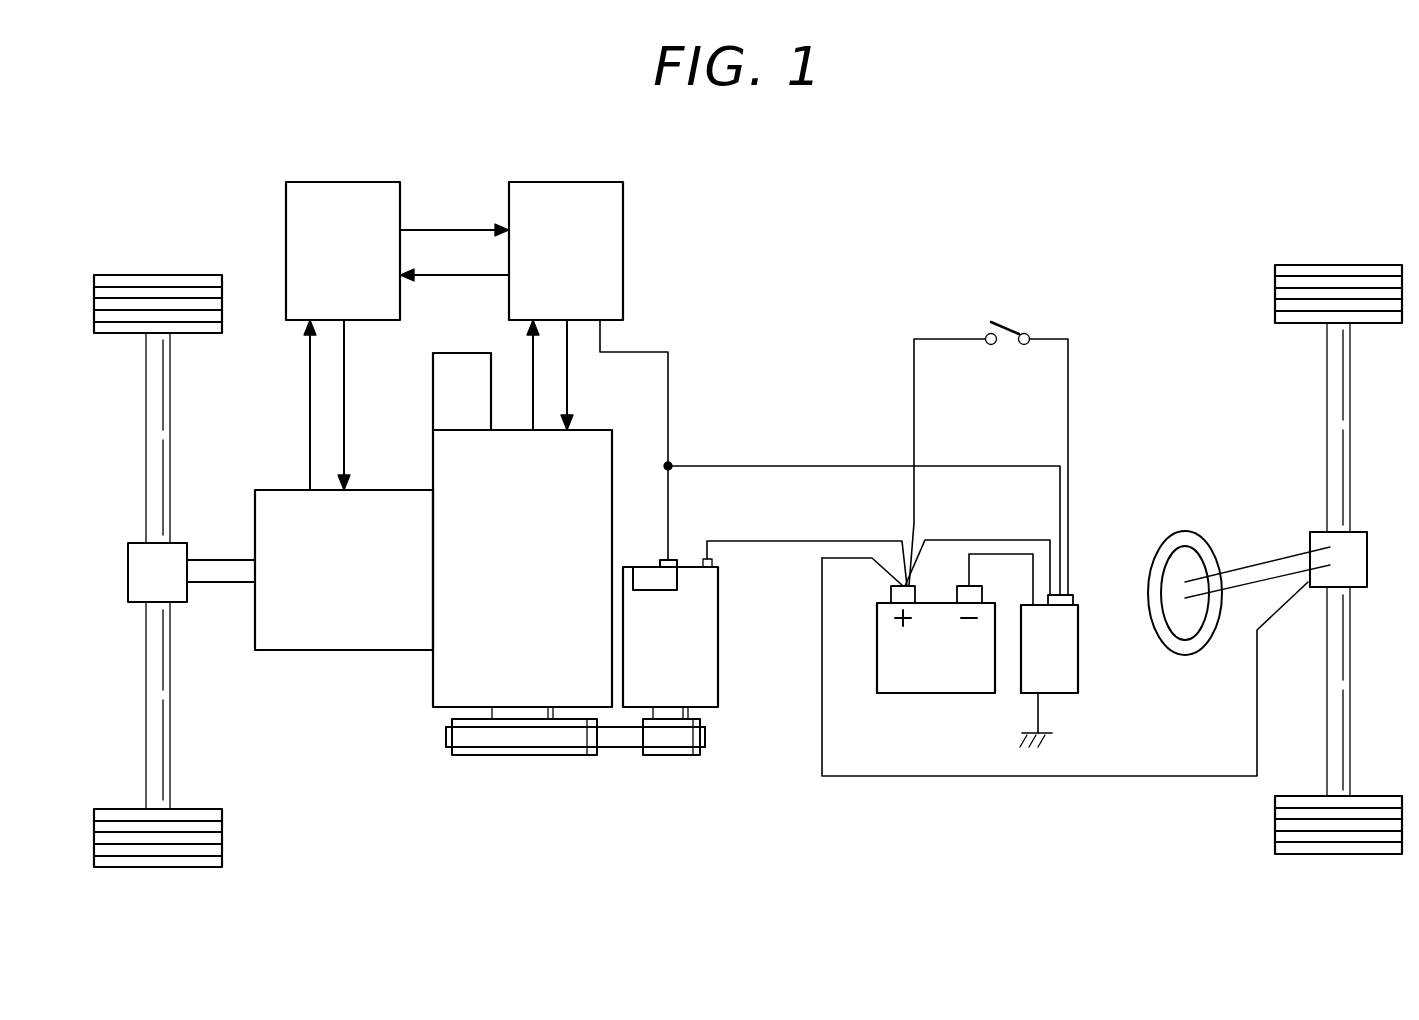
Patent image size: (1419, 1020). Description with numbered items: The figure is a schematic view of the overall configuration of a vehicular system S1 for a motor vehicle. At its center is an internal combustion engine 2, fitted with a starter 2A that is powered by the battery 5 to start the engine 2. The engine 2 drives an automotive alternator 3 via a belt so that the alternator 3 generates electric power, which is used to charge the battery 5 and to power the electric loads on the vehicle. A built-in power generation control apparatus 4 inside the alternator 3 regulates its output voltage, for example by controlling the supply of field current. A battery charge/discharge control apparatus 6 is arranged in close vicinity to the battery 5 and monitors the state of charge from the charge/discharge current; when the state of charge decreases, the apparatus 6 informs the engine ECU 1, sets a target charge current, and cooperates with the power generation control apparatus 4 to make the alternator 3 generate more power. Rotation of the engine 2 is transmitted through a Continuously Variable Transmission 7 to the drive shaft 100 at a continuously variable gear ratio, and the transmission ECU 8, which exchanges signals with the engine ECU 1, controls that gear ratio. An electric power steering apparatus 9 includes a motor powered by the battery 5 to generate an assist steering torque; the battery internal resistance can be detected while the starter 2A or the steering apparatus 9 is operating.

The engine ECU 1 is at (573, 182).
The internal combustion engine 2 is at (597, 430).
The starter 2A is at (460, 353).
The automotive alternator 3 is at (718, 600).
The power generation control apparatus 4 is at (643, 580).
The battery 5 is at (935, 693).
The battery charge/discharge control apparatus 6 is at (1078, 672).
The Continuously Variable Transmission 7 is at (392, 490).
The transmission ECU 8 is at (350, 182).
The electric power steering apparatus 9 is at (1318, 532).
The drive shaft 100 is at (215, 558).
The vehicular system S1 is at (912, 212).